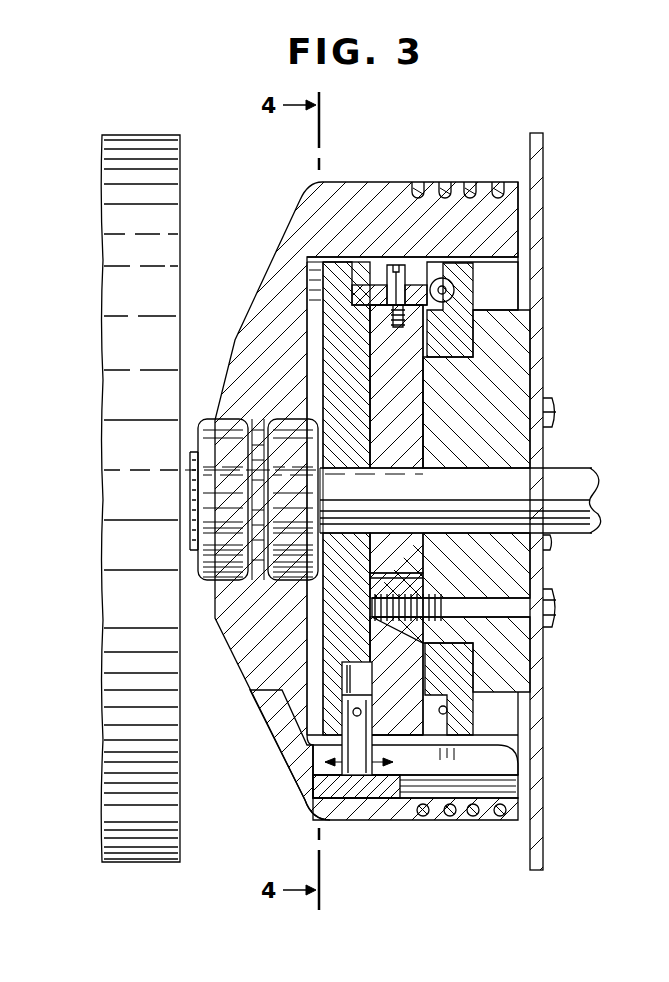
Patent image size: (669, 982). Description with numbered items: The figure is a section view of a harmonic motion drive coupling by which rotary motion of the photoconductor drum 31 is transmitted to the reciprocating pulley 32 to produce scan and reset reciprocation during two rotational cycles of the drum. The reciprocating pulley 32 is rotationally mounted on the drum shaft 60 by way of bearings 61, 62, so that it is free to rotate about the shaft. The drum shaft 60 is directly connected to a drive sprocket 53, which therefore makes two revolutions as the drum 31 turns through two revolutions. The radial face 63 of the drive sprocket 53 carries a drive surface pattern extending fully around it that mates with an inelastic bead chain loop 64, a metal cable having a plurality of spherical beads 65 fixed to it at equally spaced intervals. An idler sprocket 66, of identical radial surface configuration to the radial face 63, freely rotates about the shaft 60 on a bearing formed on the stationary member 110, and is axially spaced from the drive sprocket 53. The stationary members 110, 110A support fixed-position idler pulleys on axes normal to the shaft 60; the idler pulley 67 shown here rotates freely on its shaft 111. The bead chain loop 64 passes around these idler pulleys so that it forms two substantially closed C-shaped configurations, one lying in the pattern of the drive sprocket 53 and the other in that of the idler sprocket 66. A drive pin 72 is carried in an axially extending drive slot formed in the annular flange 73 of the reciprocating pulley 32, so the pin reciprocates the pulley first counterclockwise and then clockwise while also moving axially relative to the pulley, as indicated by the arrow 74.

The drum 31 is at (143, 862).
The reciprocating pulley 32 is at (330, 822).
The drive sprocket 53 is at (323, 300).
The drum shaft 60 is at (562, 468).
The bearing 61 is at (215, 432).
The bearing 62 is at (280, 425).
The radial face 63 is at (358, 265).
The bead chain loop 64 is at (365, 262).
The spherical beads 65 is at (478, 270).
The idler sprocket 66 is at (478, 297).
The idler pulley 67 is at (360, 306).
The drive pin 72 is at (362, 790).
The annular flange 73 is at (500, 762).
The arrow 74 is at (340, 795).
The stationary member 110 is at (522, 340).
The stationary member 110A is at (405, 400).
The shaft 111 is at (377, 312).